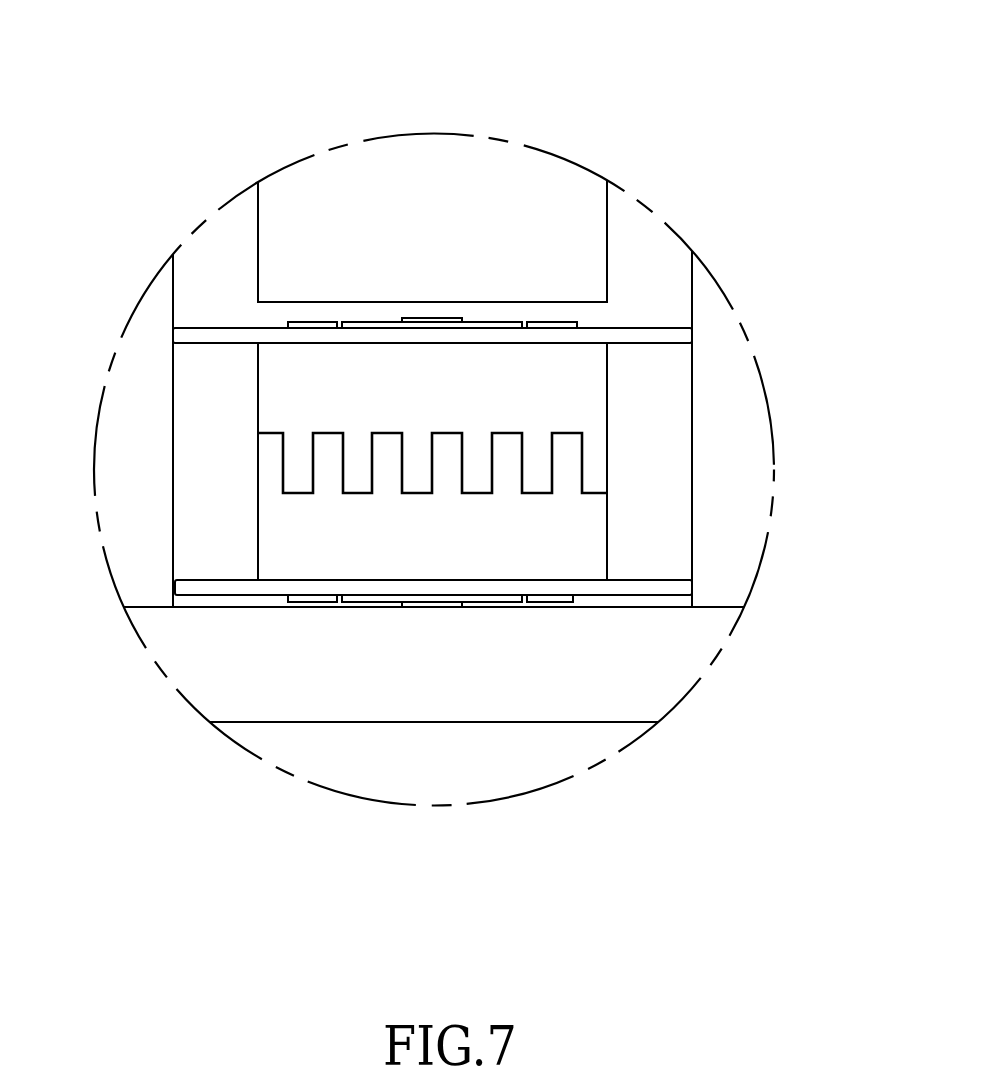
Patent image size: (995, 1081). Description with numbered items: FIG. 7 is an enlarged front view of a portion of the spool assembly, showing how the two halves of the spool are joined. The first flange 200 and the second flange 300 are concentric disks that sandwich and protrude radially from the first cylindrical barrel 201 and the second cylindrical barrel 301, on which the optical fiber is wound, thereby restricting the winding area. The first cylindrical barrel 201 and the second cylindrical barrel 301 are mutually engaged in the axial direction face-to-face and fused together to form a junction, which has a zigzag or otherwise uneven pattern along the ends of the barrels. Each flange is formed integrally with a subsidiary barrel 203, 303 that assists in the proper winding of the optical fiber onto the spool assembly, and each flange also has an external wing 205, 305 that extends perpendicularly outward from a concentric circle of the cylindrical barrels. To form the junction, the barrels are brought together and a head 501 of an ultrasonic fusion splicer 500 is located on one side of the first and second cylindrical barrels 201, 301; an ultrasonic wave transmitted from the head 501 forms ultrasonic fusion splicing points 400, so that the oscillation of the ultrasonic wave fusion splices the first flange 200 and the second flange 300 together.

The ultrasonic fusion splicer 500 is at (233, 227).
The head 501 is at (435, 160).
The first flange 200 is at (495, 261).
The subsidiary barrel 203 is at (560, 323).
The external wing 205 is at (680, 335).
The first cylindrical barrel 201 is at (592, 407).
The ultrasonic fusion splicing points 400 is at (475, 493).
The second cylindrical barrel 301 is at (280, 520).
The second flange 300 is at (433, 707).
The subsidiary barrel 303 is at (370, 603).
The external wing 305 is at (680, 590).